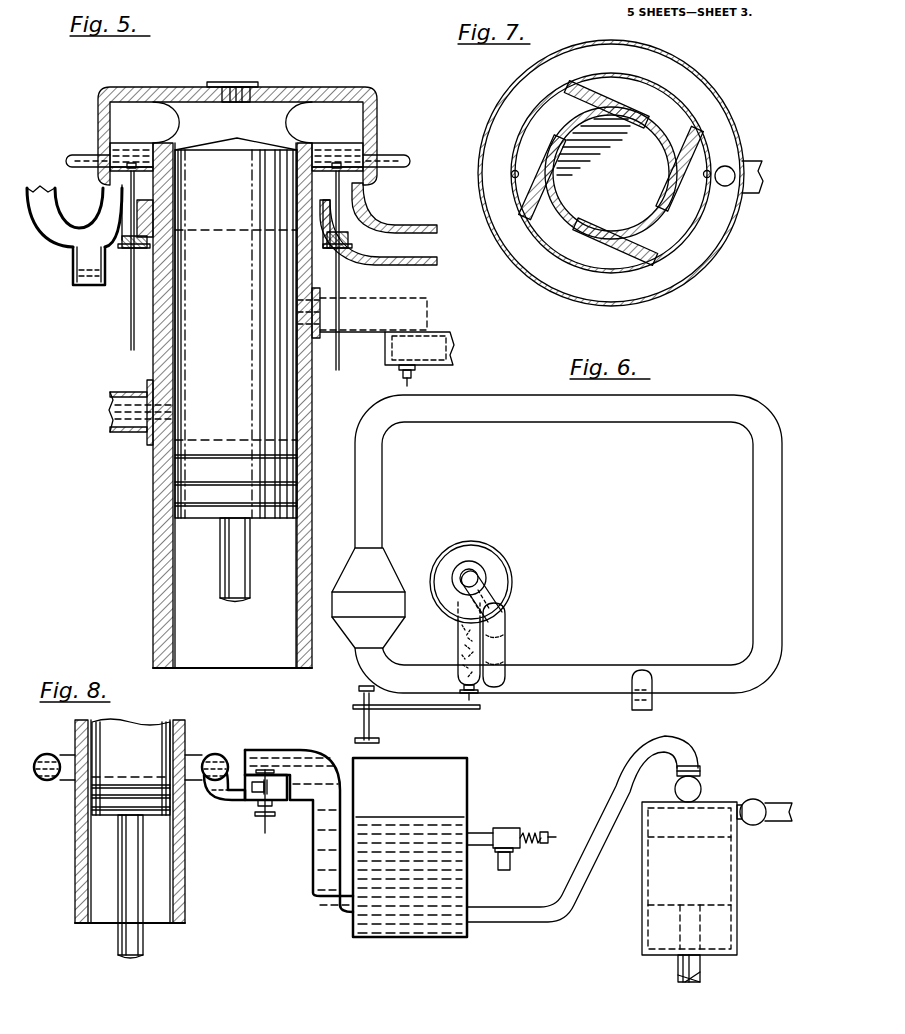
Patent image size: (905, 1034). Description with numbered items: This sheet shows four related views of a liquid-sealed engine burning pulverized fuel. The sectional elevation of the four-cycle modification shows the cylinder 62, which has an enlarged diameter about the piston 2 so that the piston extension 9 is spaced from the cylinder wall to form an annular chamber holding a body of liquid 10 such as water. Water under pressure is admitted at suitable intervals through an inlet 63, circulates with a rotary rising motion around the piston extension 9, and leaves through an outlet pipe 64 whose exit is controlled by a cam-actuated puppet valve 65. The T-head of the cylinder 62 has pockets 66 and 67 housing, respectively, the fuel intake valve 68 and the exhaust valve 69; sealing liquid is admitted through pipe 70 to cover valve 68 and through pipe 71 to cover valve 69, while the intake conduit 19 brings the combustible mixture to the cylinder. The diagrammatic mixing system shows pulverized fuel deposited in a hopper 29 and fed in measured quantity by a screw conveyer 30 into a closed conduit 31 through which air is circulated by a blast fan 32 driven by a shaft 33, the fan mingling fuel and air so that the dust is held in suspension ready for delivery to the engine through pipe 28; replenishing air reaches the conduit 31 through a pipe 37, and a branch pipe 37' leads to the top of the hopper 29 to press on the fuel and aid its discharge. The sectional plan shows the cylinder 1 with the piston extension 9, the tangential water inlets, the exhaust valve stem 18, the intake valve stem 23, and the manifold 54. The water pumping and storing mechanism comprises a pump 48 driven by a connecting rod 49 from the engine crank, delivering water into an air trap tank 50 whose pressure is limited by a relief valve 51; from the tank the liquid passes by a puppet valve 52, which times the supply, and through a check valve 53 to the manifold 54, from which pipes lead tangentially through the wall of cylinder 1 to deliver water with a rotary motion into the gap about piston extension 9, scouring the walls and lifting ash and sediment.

In FIG. 7, the cylinder 1 is at (670, 128).
In FIG. 8, the cylinder 1 is at (75, 862).
In FIG. 5, the piston 2 is at (195, 493).
In FIG. 8, the piston 2 is at (131, 838).
In FIG. 5, the piston extension 9 is at (262, 265).
In FIG. 7, the piston extension 9 is at (611, 173).
In FIG. 7, the body of liquid 10 is at (558, 222).
In FIG. 7, the valve stem 18 is at (733, 164).
In FIG. 5, the intake conduit 19 is at (60, 233).
In FIG. 7, the valve stem 23 is at (510, 183).
In FIG. 6, the pipe 28 is at (652, 706).
In FIG. 6, the hopper 29 is at (487, 557).
In FIG. 6, the screw conveyer 30 is at (458, 640).
In FIG. 6, the conduit 31 is at (586, 682).
In FIG. 6, the blast fan 32 is at (380, 592).
In FIG. 6, the shaft 33 is at (370, 723).
In FIG. 6, the pipe 37 is at (518, 645).
In FIG. 6, the branch pipe 37' is at (503, 596).
In FIG. 8, the pump 48 is at (737, 890).
In FIG. 8, the connecting rod 49 is at (690, 965).
In FIG. 8, the air trap tank 50 is at (470, 820).
In FIG. 8, the relief valve 51 is at (510, 833).
In FIG. 8, the puppet valve 52 is at (267, 770).
In FIG. 8, the check valve 53 is at (238, 797).
In FIG. 7, the manifold 54 is at (680, 268).
In FIG. 8, the manifold 54 is at (220, 756).
In FIG. 5, the cylinder 62 is at (153, 578).
In FIG. 5, the inlet 63 is at (118, 392).
In FIG. 5, the outlet pipe 64 is at (372, 330).
In FIG. 5, the puppet valve 65 is at (430, 313).
In FIG. 5, the pocket 66 is at (125, 147).
In FIG. 5, the pocket 67 is at (335, 150).
In FIG. 5, the fuel intake valve 68 is at (118, 180).
In FIG. 5, the exhaust valve 69 is at (360, 193).
In FIG. 5, the pipe 70 is at (80, 160).
In FIG. 5, the pipe 71 is at (398, 164).